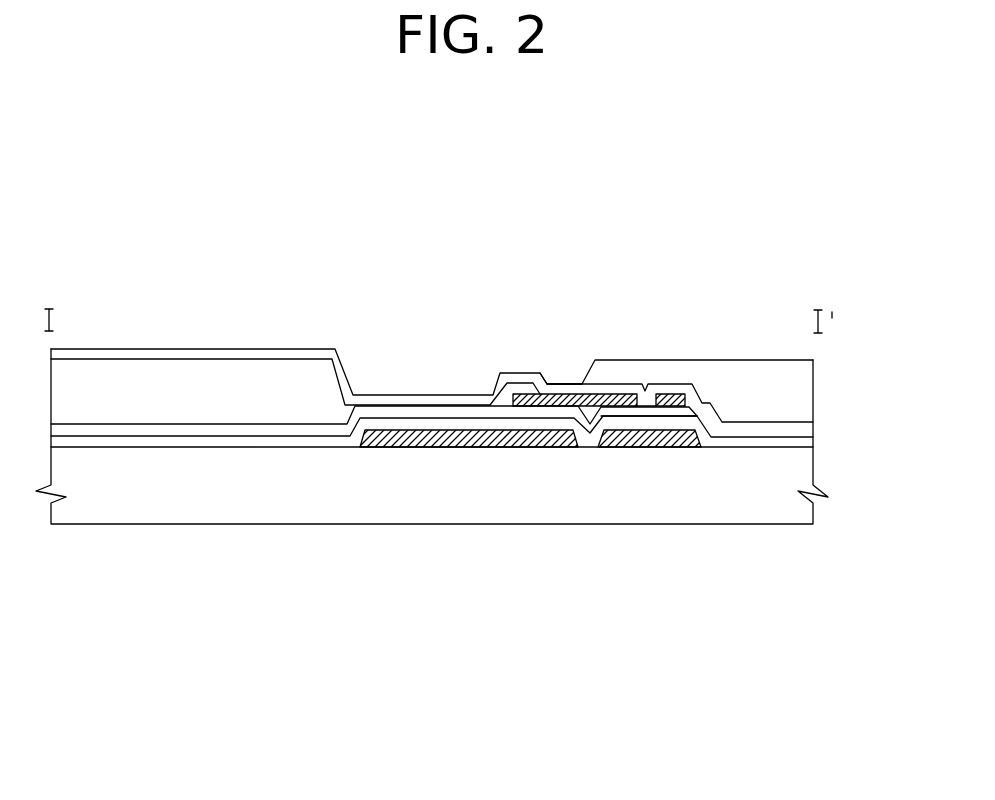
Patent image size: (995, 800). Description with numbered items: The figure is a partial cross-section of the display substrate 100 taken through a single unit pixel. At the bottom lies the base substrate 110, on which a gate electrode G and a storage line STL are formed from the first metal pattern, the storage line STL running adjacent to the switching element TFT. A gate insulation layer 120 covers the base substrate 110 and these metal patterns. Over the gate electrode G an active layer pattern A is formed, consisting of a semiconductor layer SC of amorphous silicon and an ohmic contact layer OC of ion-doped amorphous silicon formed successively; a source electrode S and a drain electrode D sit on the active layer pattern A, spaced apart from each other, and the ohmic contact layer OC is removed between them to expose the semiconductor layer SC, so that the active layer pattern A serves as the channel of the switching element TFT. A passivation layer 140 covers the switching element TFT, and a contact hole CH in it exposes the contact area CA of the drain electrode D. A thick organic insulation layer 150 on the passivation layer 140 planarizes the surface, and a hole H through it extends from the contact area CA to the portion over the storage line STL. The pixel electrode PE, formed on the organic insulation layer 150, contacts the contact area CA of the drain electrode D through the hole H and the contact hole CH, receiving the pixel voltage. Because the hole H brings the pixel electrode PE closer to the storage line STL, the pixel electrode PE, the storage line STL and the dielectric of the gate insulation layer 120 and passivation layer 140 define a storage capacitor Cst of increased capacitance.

The display substrate 100 is at (459, 212).
The base substrate 110 is at (807, 513).
The gate insulation layer 120 is at (807, 443).
The passivation layer 140 is at (807, 432).
The organic insulation layer 150 is at (807, 392).
The pixel electrode PE is at (201, 357).
The storage line STL is at (392, 441).
The unit pixel storage capacitor Cst is at (462, 592).
The gate electrode G is at (692, 440).
The drain electrode D is at (551, 402).
The source electrode S is at (668, 398).
The semiconductor layer SC is at (618, 415).
The ohmic contact layer OC is at (634, 398).
The active layer pattern A is at (667, 593).
The switching element TFT is at (750, 627).
The contact hole CH is at (557, 373).
The contact area CA is at (593, 353).
The hole H is at (593, 282).